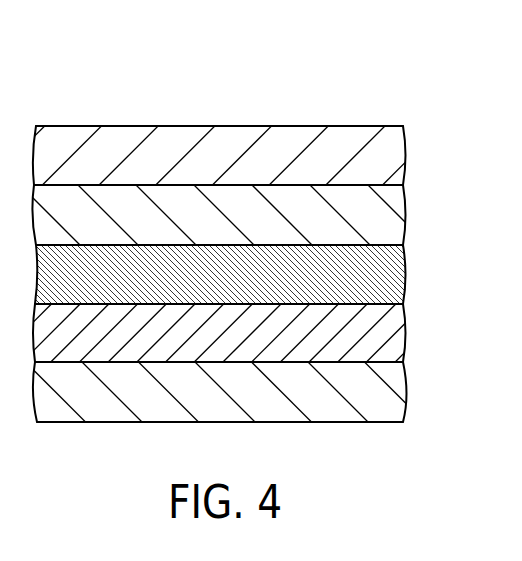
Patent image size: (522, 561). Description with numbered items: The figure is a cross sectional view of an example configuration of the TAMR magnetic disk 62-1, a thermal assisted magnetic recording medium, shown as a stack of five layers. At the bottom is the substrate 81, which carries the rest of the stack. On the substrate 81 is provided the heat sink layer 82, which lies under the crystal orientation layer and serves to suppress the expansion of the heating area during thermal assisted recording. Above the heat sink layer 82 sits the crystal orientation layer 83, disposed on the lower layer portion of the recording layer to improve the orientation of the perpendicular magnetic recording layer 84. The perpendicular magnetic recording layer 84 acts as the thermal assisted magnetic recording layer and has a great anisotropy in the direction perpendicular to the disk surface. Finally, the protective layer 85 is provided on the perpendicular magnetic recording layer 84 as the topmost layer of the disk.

The TAMR magnetic disk 62-1 is at (316, 101).
The substrate 81 is at (402, 391).
The heat sink layer 82 is at (403, 330).
The crystal orientation layer 83 is at (404, 273).
The perpendicular magnetic recording layer 84 is at (402, 217).
The protective layer 85 is at (404, 156).